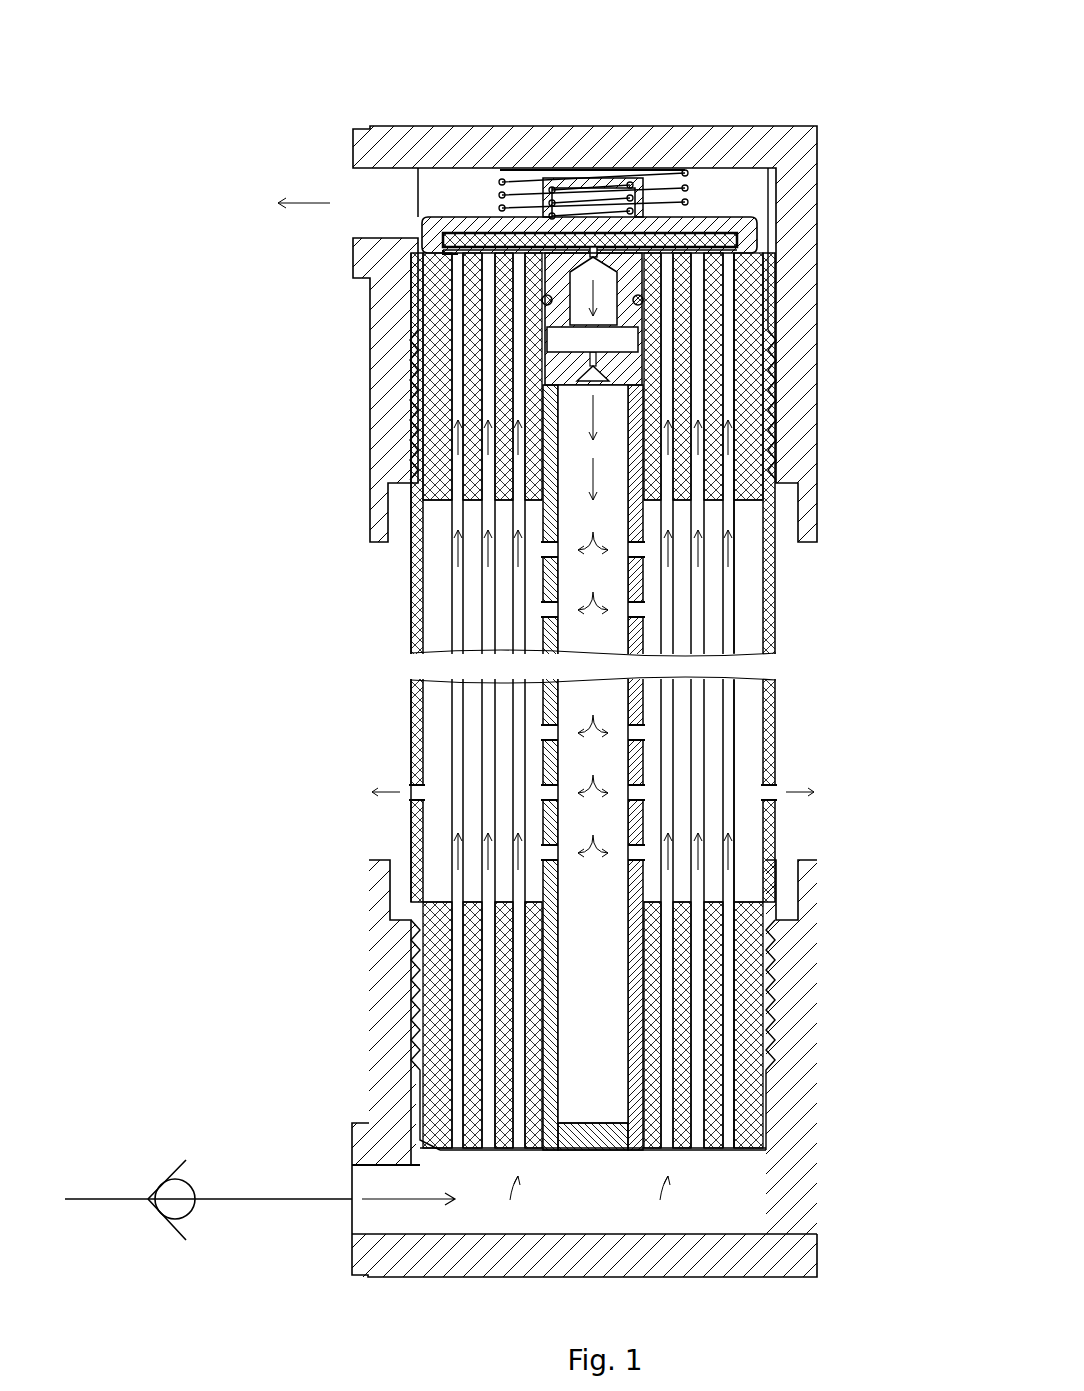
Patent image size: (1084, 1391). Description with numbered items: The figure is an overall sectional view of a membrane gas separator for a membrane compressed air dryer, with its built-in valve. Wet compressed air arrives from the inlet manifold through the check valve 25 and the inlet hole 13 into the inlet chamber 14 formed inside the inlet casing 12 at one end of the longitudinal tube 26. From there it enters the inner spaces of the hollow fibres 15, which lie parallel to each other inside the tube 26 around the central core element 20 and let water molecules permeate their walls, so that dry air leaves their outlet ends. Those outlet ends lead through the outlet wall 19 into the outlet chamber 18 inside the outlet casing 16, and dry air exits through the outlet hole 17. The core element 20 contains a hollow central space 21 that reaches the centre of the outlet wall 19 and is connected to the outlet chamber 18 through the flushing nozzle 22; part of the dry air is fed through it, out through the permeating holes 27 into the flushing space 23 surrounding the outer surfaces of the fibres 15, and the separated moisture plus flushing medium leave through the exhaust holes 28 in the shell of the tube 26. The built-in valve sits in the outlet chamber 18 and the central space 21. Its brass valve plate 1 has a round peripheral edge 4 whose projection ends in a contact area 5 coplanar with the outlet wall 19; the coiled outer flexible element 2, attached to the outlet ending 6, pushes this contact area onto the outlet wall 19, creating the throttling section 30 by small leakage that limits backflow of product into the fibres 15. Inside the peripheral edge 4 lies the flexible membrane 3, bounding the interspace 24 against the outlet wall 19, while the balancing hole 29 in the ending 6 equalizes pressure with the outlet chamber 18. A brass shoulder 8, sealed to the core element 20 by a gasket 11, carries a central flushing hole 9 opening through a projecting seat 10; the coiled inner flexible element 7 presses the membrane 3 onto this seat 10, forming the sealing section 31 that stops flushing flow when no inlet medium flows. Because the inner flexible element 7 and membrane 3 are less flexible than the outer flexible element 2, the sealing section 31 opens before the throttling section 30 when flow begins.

The valve plate 1 is at (765, 126).
The outer flexible element 2 is at (722, 222).
The flexible membrane 3 is at (737, 250).
The peripheral edge 4 is at (745, 243).
The contact area 5 is at (421, 254).
The outlet ending 6 is at (670, 185).
The inner flexible element 7 is at (617, 182).
The shoulder 8 is at (640, 298).
The flushing hole 9 is at (415, 350).
The seat 10 is at (583, 183).
The gasket 11 is at (650, 327).
The inlet casing 12 is at (797, 1105).
The inlet hole 13 is at (362, 1183).
The inlet chamber 14 is at (725, 1195).
The hollow fibres 15 is at (733, 720).
The outlet casing 16 is at (410, 142).
The outlet hole 17 is at (390, 203).
The outlet chamber 18 is at (452, 195).
The outlet wall 19 is at (500, 285).
The central core element 20 is at (630, 573).
The central space 21 is at (548, 518).
The flushing nozzle 22 is at (583, 337).
The flushing space 23 is at (743, 612).
The interspace 24 is at (612, 257).
The check valve 25 is at (185, 1160).
The tube 26 is at (762, 985).
The permeating holes 27 is at (548, 793).
The exhaust holes 28 is at (410, 800).
The balancing hole 29 is at (597, 202).
The throttling section 30 is at (430, 262).
The sealing section 31 is at (523, 230).